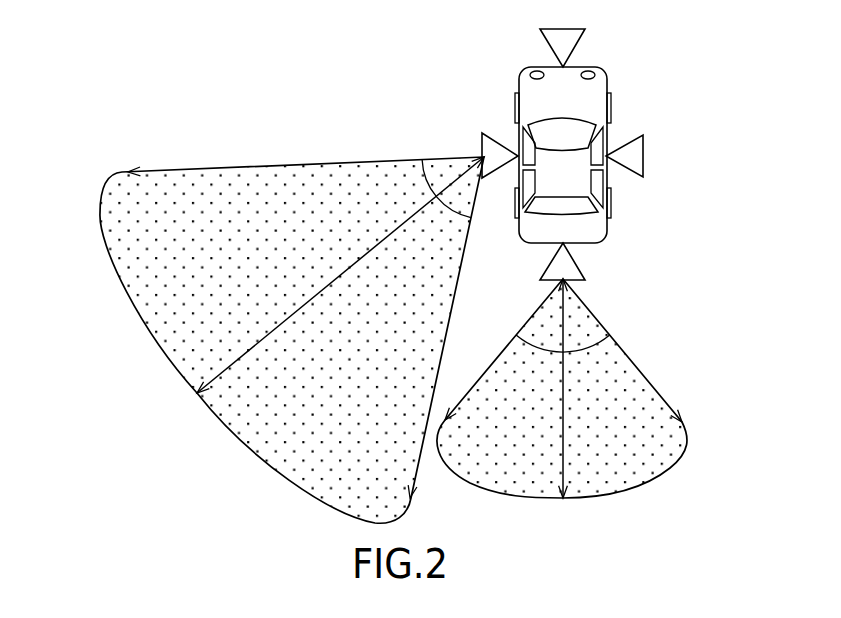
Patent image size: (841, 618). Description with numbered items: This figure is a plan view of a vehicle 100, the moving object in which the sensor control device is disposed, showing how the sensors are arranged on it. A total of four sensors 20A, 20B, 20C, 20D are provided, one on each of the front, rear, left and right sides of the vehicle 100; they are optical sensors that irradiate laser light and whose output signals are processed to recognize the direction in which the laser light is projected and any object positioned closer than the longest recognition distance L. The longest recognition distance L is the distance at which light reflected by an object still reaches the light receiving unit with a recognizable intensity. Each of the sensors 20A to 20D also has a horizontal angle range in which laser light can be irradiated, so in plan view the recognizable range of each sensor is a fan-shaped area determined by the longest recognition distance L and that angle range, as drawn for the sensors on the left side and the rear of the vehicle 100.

The vehicle 100 is at (604, 71).
The sensor 20A is at (543, 43).
The sensor 20B is at (497, 141).
The sensor 20C is at (577, 263).
The sensor 20D is at (643, 155).
The longest recognition distance L is at (319, 288).